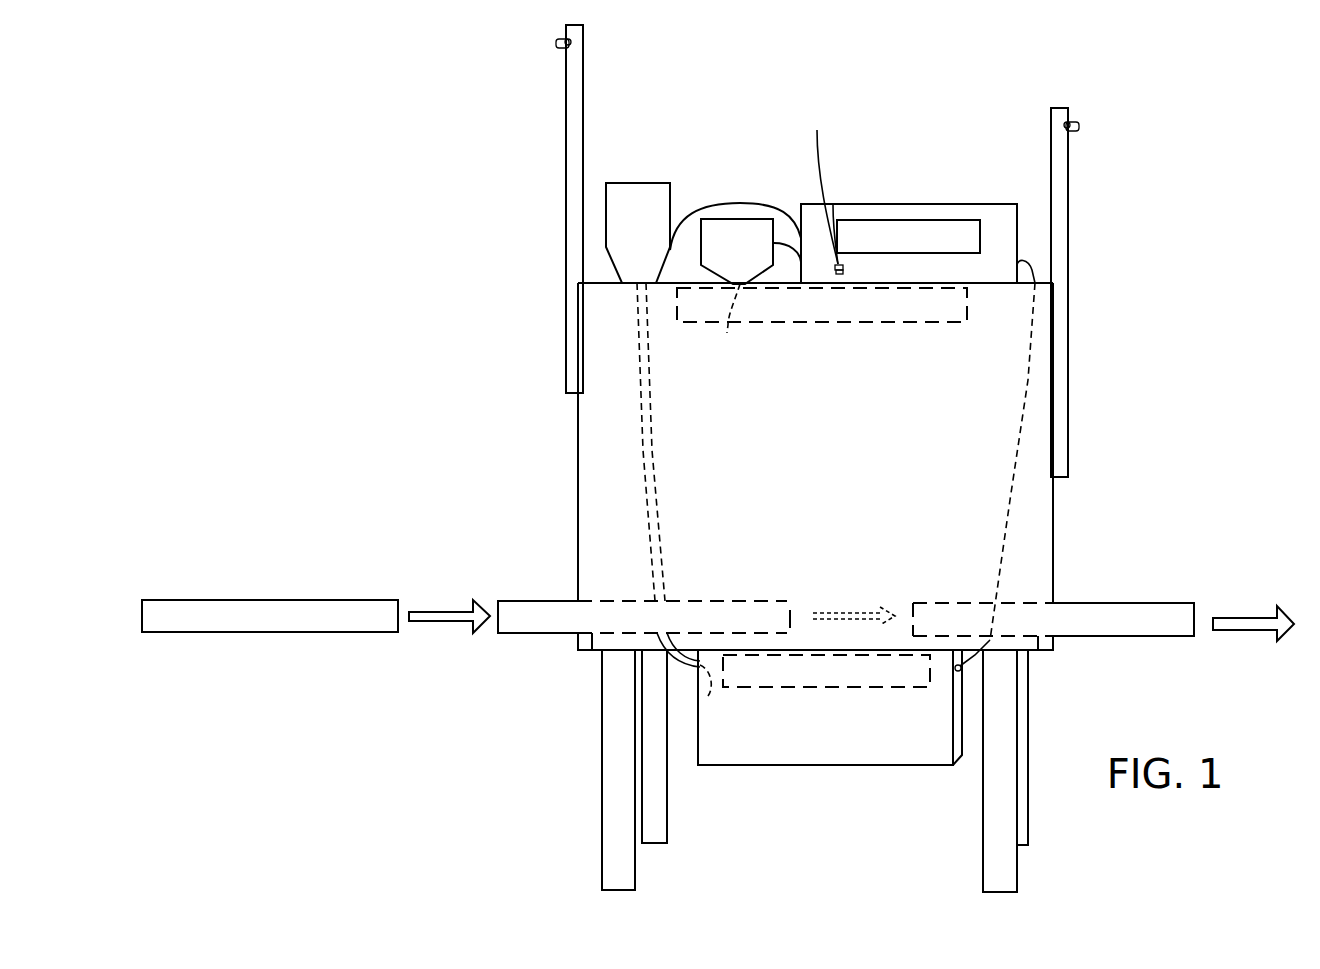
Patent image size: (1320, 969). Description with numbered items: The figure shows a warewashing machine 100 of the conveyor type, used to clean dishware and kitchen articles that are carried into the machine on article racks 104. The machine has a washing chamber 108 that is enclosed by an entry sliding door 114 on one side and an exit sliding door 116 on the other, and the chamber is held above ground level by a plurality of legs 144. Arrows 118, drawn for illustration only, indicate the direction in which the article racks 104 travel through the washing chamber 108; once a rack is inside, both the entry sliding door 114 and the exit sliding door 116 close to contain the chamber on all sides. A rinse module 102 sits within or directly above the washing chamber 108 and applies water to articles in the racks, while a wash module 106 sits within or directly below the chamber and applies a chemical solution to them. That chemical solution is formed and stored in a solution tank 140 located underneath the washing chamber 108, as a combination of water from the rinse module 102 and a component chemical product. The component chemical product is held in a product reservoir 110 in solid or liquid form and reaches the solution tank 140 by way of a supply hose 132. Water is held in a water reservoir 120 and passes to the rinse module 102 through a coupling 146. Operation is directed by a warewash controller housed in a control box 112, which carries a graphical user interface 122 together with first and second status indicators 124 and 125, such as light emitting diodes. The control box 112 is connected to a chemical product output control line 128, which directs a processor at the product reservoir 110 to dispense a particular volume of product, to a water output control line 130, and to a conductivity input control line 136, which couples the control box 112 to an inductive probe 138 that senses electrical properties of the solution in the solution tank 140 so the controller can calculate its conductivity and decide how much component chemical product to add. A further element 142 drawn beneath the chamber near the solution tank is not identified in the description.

The warewashing machine 100 is at (577, 488).
The rinse module 102 is at (822, 305).
The article racks 104 is at (317, 600).
The wash module 106 is at (826, 671).
The washing chamber 108 is at (820, 448).
The product reservoir 110 is at (638, 233).
The control box 112 is at (925, 204).
The entry sliding door 114 is at (566, 135).
The exit sliding door 116 is at (1070, 270).
The arrows 118 is at (462, 608).
The water reservoir 120 is at (737, 251).
The graphical user interface 122 is at (920, 220).
The first status indicator 124 is at (833, 205).
The second status indicator 125 is at (817, 130).
The chemical product output control line 128 is at (700, 203).
The water output control line 130 is at (776, 243).
The supply hose 132 is at (648, 416).
The conductivity input control line 136 is at (1020, 365).
The inductive probe 138 is at (945, 668).
The solution tank 140 is at (830, 707).
The drain hose 142 is at (708, 697).
The legs 144 is at (667, 820).
The coupling 146 is at (727, 333).